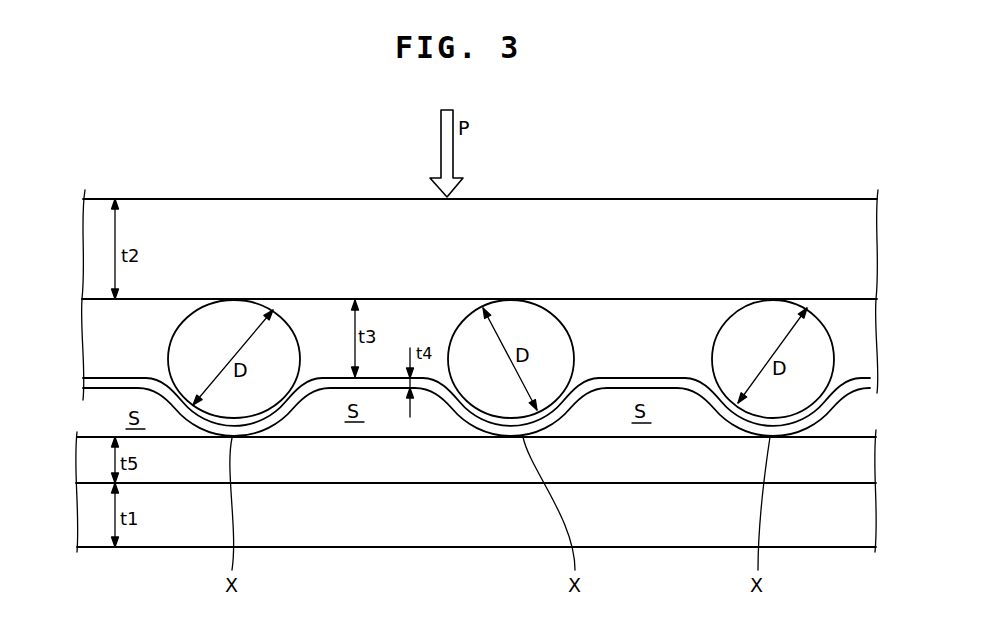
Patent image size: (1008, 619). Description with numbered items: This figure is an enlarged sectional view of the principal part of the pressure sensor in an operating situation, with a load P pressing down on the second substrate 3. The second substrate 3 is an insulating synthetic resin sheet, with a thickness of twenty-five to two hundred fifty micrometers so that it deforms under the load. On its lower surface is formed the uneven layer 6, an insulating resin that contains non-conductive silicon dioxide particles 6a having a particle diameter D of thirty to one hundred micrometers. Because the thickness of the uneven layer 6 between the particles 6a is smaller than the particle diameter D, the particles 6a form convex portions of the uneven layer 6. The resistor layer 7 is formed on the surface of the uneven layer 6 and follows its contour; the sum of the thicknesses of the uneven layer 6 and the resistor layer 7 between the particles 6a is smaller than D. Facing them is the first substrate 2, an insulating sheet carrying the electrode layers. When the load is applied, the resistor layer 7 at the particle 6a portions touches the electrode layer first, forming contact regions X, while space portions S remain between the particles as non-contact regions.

The first substrate 2 is at (441, 530).
The second substrate 3 is at (626, 210).
The uneven layer 6 is at (459, 358).
The non-conductive particles 6a is at (285, 353).
The resistor layer 7 is at (113, 383).